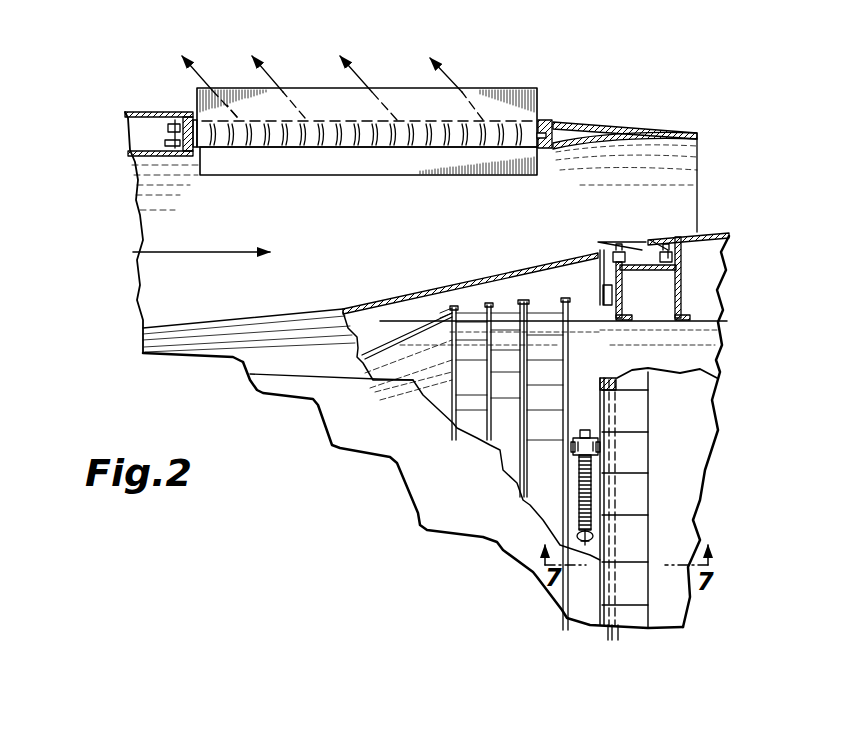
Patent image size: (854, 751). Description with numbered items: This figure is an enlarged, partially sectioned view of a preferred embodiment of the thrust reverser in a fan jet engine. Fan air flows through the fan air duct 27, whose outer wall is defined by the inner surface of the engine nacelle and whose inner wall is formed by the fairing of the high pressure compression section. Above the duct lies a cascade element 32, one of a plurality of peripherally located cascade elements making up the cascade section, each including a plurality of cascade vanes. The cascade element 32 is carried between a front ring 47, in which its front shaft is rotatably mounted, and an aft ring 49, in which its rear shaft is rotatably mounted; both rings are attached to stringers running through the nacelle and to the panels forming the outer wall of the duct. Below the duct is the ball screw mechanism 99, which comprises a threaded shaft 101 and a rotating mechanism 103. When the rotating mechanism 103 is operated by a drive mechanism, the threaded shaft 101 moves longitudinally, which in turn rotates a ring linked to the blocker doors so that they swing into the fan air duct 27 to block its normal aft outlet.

The fan air duct 27 is at (453, 237).
The cascade element 32 is at (538, 97).
The front ring 47 is at (186, 157).
The aft ring 49 is at (558, 123).
The ball screw mechanism 99 is at (578, 484).
The threaded shaft 101 is at (578, 500).
The rotating mechanism 103 is at (572, 446).